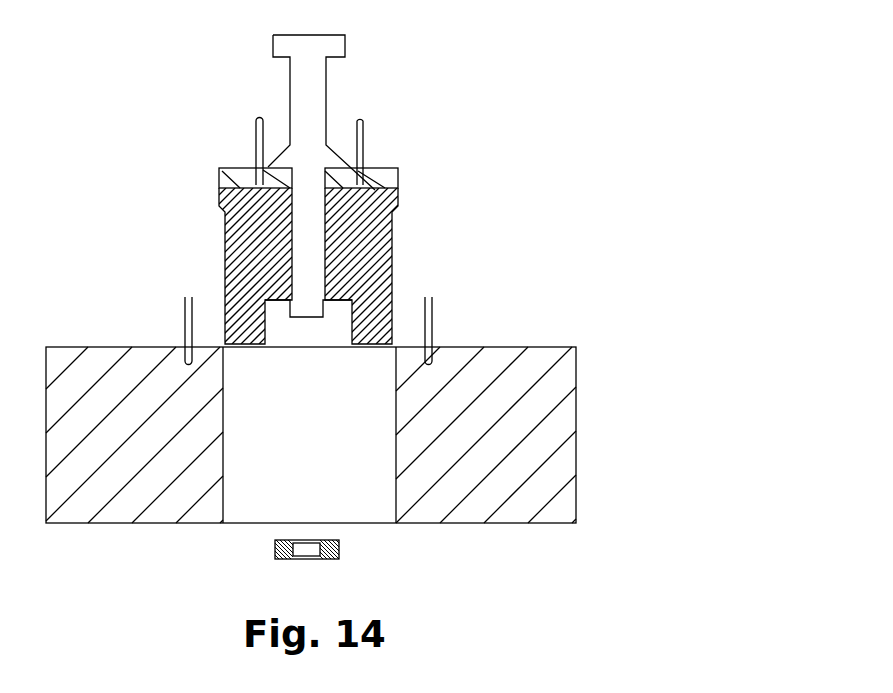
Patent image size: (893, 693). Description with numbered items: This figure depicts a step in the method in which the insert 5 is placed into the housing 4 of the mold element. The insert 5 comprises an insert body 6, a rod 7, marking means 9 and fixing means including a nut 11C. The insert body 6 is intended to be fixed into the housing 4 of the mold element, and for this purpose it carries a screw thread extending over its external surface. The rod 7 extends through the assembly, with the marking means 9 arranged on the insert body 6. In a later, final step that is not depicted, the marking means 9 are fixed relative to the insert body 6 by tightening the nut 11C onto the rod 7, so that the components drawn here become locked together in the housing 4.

The insert 5 is at (198, 116).
The rod 7 is at (312, 98).
The marking means 9 is at (392, 174).
The insert body 6 is at (365, 272).
The housing 4 is at (311, 444).
The nut 11C is at (328, 559).